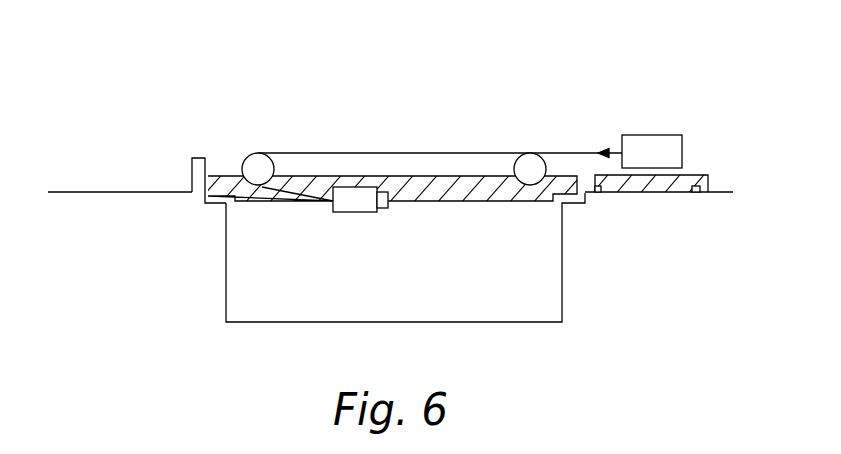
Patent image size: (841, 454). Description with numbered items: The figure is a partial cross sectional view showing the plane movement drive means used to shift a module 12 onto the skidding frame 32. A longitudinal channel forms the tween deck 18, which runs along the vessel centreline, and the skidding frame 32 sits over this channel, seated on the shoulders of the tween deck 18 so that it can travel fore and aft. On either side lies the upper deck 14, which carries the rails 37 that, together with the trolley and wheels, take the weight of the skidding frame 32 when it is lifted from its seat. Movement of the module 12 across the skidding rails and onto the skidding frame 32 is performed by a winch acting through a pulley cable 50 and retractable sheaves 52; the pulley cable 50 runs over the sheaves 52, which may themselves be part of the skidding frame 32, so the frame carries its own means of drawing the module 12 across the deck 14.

The module 12 is at (668, 165).
The deck 14 is at (155, 252).
The tween deck 18 is at (343, 300).
The skidding frame 32 is at (452, 190).
The rails 37 is at (193, 169).
The pulley cable 50 is at (305, 150).
The retractable sheaves 52 is at (251, 154).